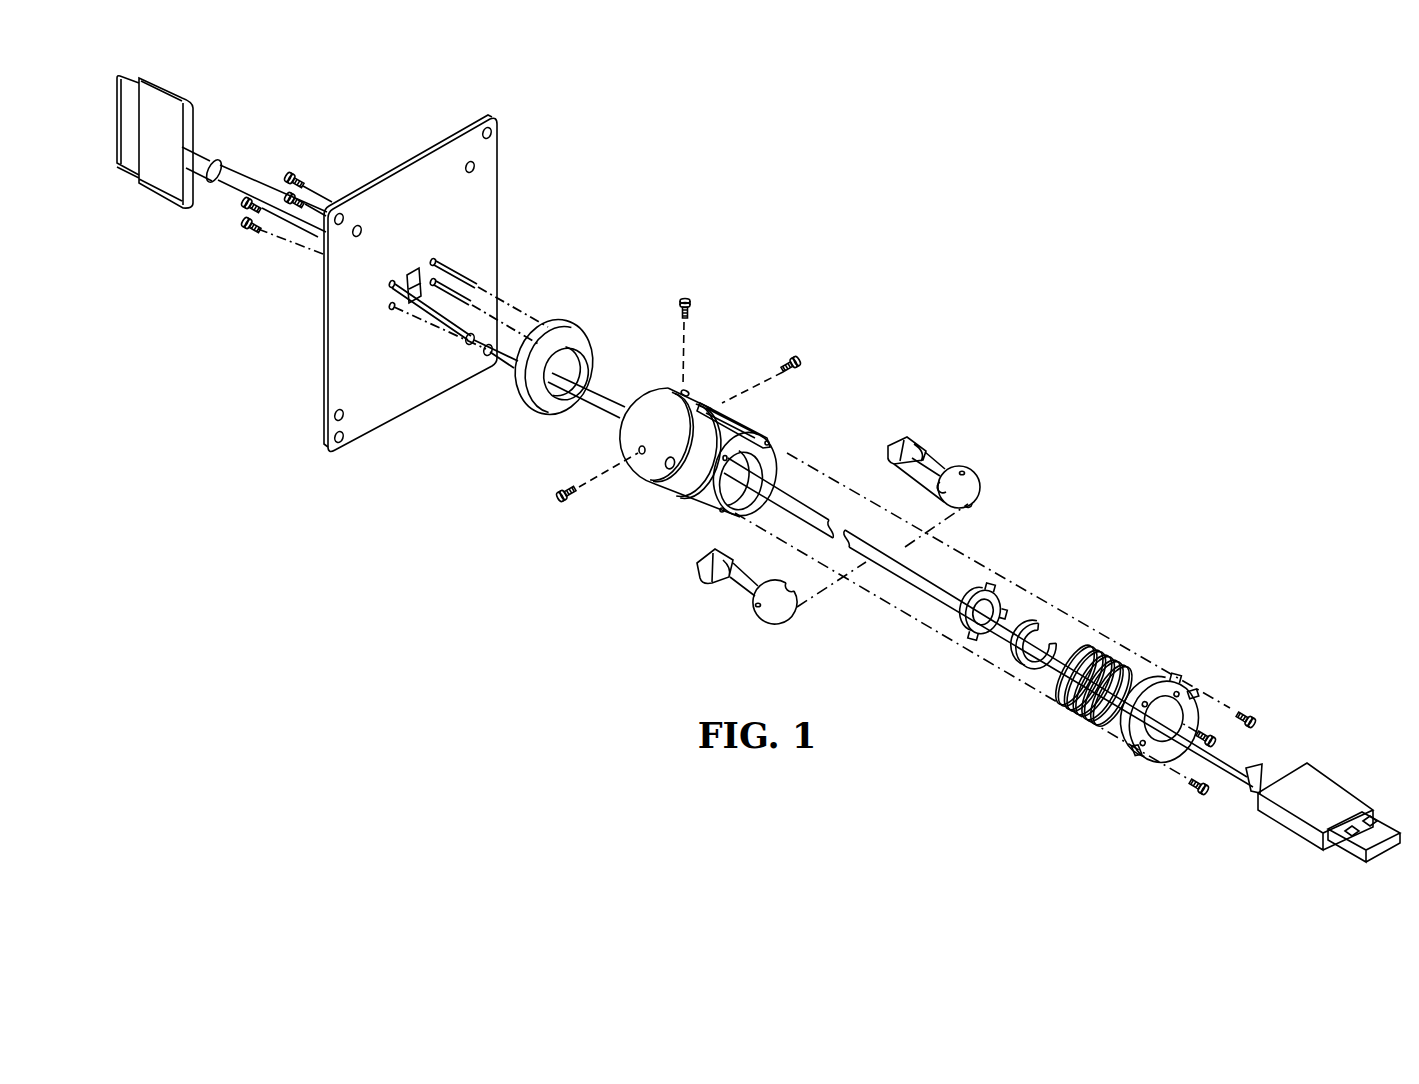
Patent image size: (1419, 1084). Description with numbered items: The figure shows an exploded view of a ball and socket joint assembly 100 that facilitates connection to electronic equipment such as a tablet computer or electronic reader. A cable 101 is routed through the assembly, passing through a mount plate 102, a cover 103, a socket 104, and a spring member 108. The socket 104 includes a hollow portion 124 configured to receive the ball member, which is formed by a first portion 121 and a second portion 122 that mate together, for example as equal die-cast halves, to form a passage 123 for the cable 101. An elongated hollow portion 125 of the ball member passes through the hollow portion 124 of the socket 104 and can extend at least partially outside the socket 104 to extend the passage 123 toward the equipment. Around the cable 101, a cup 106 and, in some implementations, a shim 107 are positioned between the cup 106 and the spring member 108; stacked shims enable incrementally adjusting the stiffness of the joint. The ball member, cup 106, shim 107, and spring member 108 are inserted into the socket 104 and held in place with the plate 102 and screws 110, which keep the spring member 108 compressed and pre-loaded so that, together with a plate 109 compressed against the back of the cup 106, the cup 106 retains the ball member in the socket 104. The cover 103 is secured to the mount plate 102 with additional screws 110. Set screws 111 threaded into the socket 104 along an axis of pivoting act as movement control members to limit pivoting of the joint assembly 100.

The ball and socket joint assembly 100 is at (901, 103).
The cable 101 is at (1333, 778).
The mount plate 102 is at (414, 160).
The cover 103 is at (564, 318).
The socket 104 is at (681, 490).
The cup 106 is at (997, 582).
The shim 107 is at (1054, 620).
The spring member 108 is at (1106, 640).
The plate 109 is at (1185, 675).
The screws 110 is at (290, 172).
The set screws 111 is at (555, 500).
The first portion 121 is at (950, 470).
The second portion 122 is at (770, 623).
The passage 123 is at (988, 508).
The hollow portion 124 is at (789, 466).
The elongated hollow portion 125 is at (914, 442).